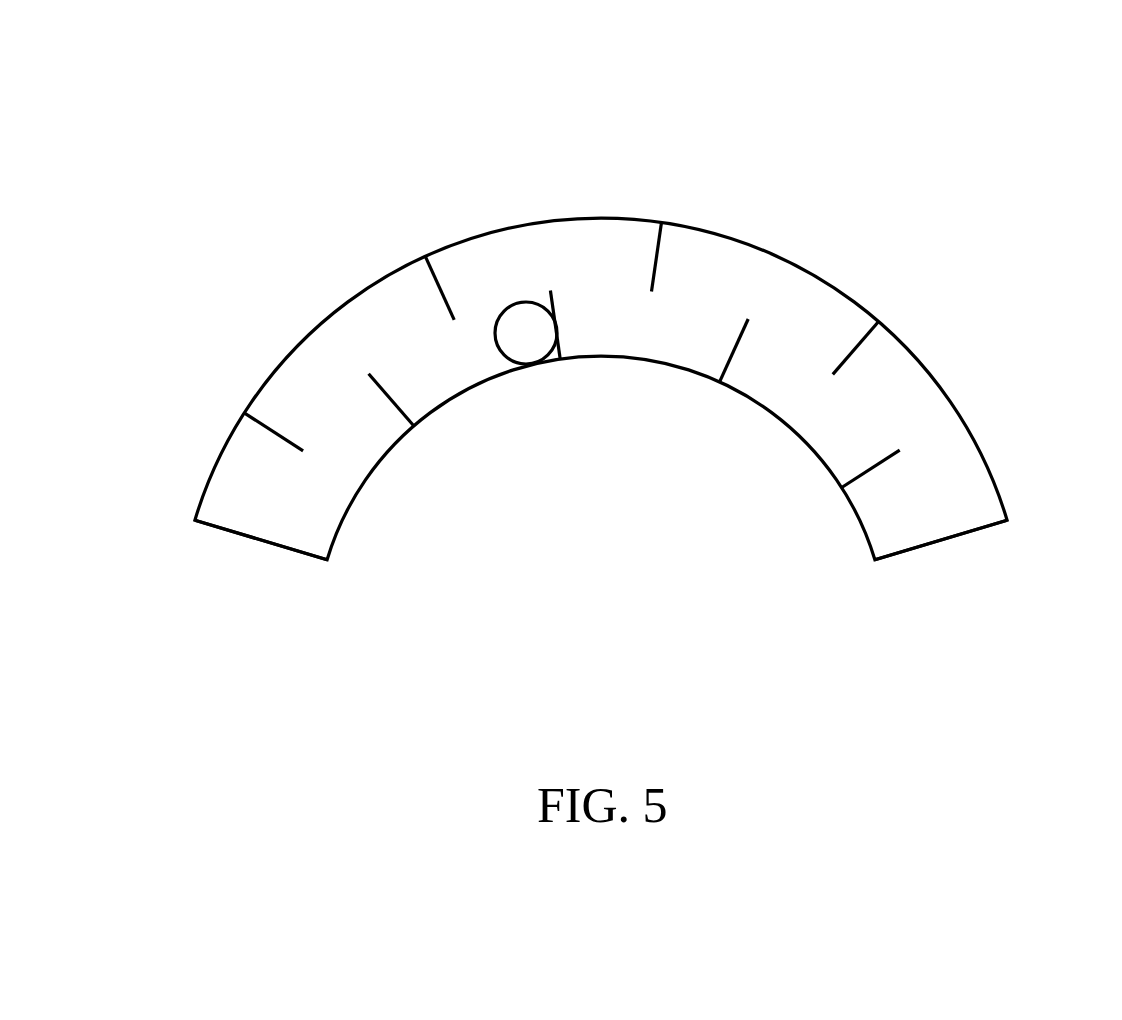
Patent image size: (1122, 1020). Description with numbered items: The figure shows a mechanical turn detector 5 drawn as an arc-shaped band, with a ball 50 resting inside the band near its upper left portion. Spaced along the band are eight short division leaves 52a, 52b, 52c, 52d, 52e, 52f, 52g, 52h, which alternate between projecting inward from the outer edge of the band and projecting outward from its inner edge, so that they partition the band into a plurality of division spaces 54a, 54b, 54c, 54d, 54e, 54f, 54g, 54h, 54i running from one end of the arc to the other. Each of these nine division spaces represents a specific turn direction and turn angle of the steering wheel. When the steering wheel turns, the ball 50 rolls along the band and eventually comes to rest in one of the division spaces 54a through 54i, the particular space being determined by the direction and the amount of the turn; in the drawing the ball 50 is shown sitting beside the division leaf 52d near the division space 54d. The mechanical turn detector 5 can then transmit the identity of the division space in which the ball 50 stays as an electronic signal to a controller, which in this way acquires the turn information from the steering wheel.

The mechanical turn detector 5 is at (702, 122).
The ball 50 is at (527, 333).
The division leaf 52a is at (268, 448).
The division leaf 52b is at (395, 400).
The division leaf 52c is at (427, 292).
The division leaf 52d is at (560, 353).
The division leaf 52e is at (650, 242).
The division leaf 52f is at (740, 352).
The division leaf 52g is at (855, 353).
The division leaf 52h is at (870, 475).
The division space 54a is at (277, 508).
The division space 54b is at (348, 430).
The division space 54c is at (428, 357).
The division space 54d is at (502, 285).
The division space 54e is at (617, 315).
The division space 54f is at (692, 313).
The division space 54g is at (782, 350).
The division space 54h is at (868, 407).
The division space 54i is at (938, 496).